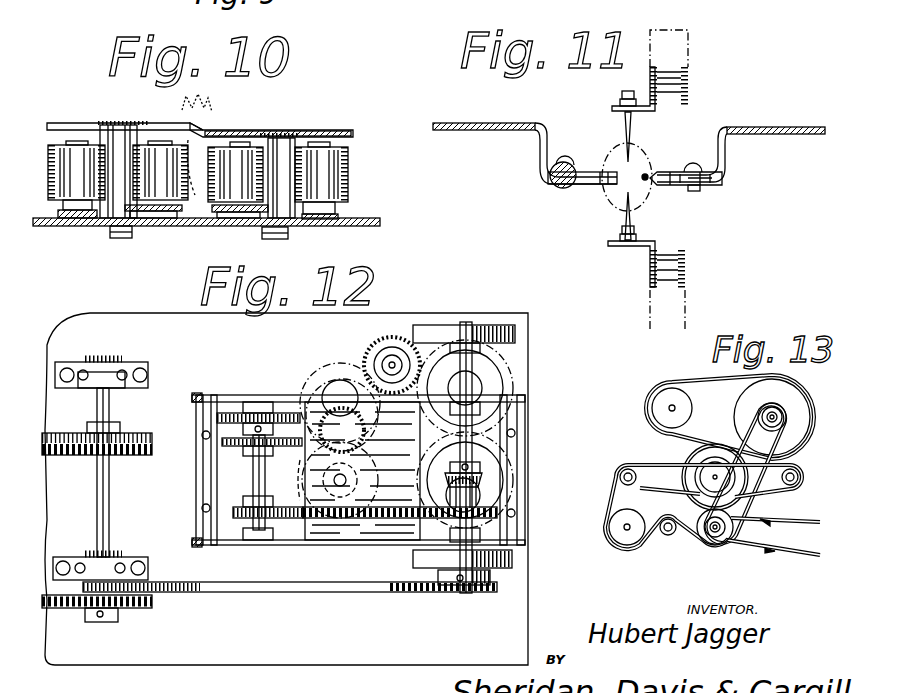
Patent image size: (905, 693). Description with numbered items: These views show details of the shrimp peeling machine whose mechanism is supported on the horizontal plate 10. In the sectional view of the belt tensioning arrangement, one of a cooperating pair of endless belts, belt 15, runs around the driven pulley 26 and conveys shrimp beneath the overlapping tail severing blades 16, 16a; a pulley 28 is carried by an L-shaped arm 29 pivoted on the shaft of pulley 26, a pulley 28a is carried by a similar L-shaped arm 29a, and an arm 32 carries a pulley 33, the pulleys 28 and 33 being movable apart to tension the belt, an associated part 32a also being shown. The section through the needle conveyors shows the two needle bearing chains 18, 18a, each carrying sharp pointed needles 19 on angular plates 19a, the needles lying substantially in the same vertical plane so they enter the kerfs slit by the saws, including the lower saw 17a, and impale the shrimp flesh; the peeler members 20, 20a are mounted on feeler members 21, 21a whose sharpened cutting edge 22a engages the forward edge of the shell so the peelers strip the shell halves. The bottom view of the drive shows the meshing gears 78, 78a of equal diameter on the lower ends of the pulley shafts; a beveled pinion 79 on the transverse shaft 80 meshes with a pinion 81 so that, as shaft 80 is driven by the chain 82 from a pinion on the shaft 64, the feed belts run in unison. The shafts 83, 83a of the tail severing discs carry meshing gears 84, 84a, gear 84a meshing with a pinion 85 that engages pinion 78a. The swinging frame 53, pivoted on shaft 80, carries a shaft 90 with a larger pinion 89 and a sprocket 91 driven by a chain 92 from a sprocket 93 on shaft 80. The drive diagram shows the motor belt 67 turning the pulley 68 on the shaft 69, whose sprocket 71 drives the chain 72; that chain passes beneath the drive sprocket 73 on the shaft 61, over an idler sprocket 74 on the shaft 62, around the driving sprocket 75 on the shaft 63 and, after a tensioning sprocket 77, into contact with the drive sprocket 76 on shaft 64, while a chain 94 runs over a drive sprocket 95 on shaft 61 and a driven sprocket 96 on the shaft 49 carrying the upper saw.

In FIG. 10, the horizontal plate 10 is at (74, 226).
In FIG. 12, the horizontal plate 10 is at (210, 665).
In FIG. 10, the endless belt 15 is at (348, 162).
In FIG. 10, the tail severing blade 16 is at (318, 131).
In FIG. 10, the tail severing blade 16a is at (90, 123).
In FIG. 10, the pulley 28 is at (240, 153).
In FIG. 10, the pulley 28a is at (162, 152).
In FIG. 10, the L-shaped arm 29 is at (226, 226).
In FIG. 10, the L-shaped arm 29a is at (156, 226).
In FIG. 10, the arm 32 is at (340, 216).
In FIG. 10, the base bar mounting 32a is at (90, 225).
In FIG. 10, the pulley 33 is at (343, 184).
In FIG. 11, the needle bearing chain 18 is at (688, 95).
In FIG. 11, the needle bearing chain 18a is at (688, 258).
In FIG. 12, the needle bearing chain 18a is at (68, 452).
In FIG. 11, the needles 19 is at (626, 125).
In FIG. 11, the angular plates 19a is at (614, 104).
In FIG. 11, the peeler member 20 is at (570, 186).
In FIG. 11, the peeler member 20a is at (650, 185).
In FIG. 11, the feeler member 21 is at (490, 122).
In FIG. 11, the feeler member 21a is at (800, 126).
In FIG. 11, the cutting edge 22a is at (660, 178).
In FIG. 12, the pulley 26 is at (485, 489).
In FIG. 12, the swinging frame 53 is at (310, 546).
In FIG. 12, the horizontal shaft 64 is at (98, 508).
In FIG. 13, the horizontal shaft 64 is at (715, 540).
In FIG. 12, the chain 72 is at (72, 610).
In FIG. 12, the gear 78 is at (515, 553).
In FIG. 12, the gear 78a is at (478, 372).
In FIG. 12, the beveled pinion 79 is at (482, 471).
In FIG. 12, the transverse shaft 80 is at (480, 421).
In FIG. 12, the pinion 81 is at (482, 494).
In FIG. 12, the chain 82 is at (310, 595).
In FIG. 13, the chain 82 is at (803, 557).
In FIG. 12, the shaft 83 is at (356, 466).
In FIG. 12, the shaft 83a is at (365, 426).
In FIG. 12, the gear 84 is at (388, 481).
In FIG. 12, the gear 84a is at (340, 372).
In FIG. 12, the pinion 85 is at (392, 338).
In FIG. 12, the pinion 89 is at (225, 416).
In FIG. 12, the shaft 90 is at (256, 470).
In FIG. 12, the sprocket 91 is at (236, 506).
In FIG. 12, the chain 92 is at (400, 520).
In FIG. 12, the sprocket 93 is at (497, 513).
In FIG. 12, the rotary saw 17a is at (232, 441).
In FIG. 13, the driven shaft 49 is at (797, 481).
In FIG. 13, the horizontal shaft 61 is at (705, 483).
In FIG. 13, the horizontal shaft 62 is at (630, 468).
In FIG. 13, the horizontal shaft 63 is at (626, 532).
In FIG. 13, the belt 67 is at (694, 392).
In FIG. 13, the pulley 68 is at (790, 396).
In FIG. 13, the shaft 69 is at (774, 407).
In FIG. 13, the sprocket 71 is at (778, 426).
In FIG. 13, the drive sprocket 73 is at (697, 476).
In FIG. 13, the idler sprocket 74 is at (712, 507).
In FIG. 13, the driving sprocket 75 is at (640, 508).
In FIG. 13, the drive sprocket 76 is at (698, 523).
In FIG. 13, the tensioning sprocket 77 is at (668, 538).
In FIG. 13, the chain 94 is at (768, 496).
In FIG. 13, the drive sprocket 95 is at (703, 460).
In FIG. 13, the driven sprocket 96 is at (796, 470).